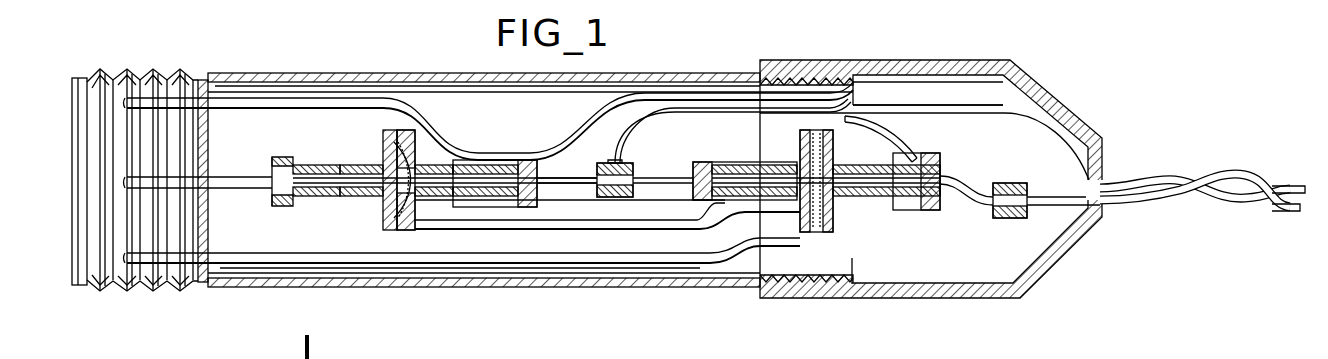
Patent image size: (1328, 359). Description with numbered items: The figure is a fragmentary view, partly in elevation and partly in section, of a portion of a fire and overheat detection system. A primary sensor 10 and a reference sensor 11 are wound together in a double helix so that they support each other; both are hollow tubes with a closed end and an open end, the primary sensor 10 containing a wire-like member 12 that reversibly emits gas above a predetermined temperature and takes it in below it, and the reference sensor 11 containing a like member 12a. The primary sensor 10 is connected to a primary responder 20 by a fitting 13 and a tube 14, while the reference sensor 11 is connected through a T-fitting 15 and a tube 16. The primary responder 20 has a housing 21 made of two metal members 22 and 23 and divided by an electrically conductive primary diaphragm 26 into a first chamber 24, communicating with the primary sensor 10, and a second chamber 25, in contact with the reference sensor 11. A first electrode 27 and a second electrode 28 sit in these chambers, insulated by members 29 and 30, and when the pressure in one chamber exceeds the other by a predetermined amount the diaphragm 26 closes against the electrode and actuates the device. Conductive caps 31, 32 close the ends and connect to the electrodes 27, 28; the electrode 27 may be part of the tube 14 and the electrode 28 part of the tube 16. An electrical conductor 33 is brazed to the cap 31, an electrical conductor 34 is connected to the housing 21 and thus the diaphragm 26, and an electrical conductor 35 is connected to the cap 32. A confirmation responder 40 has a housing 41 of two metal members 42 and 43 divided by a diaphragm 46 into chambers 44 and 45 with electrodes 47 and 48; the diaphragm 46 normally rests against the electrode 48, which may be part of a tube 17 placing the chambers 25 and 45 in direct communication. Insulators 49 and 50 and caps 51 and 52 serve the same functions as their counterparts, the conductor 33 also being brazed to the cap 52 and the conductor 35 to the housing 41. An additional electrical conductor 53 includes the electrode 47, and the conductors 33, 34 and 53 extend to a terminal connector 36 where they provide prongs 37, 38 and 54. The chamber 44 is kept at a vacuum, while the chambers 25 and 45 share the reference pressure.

The primary sensor 10 is at (1212, 191).
The reference sensor 11 is at (932, 179).
The wire-like member 12 is at (1287, 213).
The member 12a is at (1277, 183).
The fitting 13 is at (997, 220).
The tube 14 is at (955, 183).
The T-fitting 15 is at (630, 174).
The tube 16 is at (668, 190).
The tube 17 is at (568, 178).
The primary responder 20 is at (886, 212).
The housing 21 is at (804, 201).
The metal member 22 is at (832, 232).
The metal member 23 is at (806, 228).
The first chamber 24 is at (826, 156).
The second chamber 25 is at (799, 150).
The primary diaphragm 26 is at (816, 233).
The first electrode 27 is at (836, 199).
The second electrode 28 is at (793, 199).
The insulator 29 is at (877, 165).
The insulator 30 is at (753, 167).
The conductive cap 31 is at (935, 163).
The conductive cap 32 is at (693, 167).
The electrical conductor 33 is at (852, 93).
The electrical conductor 34 is at (583, 263).
The electrical conductor 35 is at (567, 224).
The terminal connector 36 is at (215, 76).
The prong 37 is at (155, 107).
The prong 38 is at (141, 275).
The confirmation responder 40 is at (393, 177).
The housing 41 is at (400, 177).
The metal member 42 is at (380, 223).
The metal member 43 is at (407, 228).
The chamber 44 is at (395, 157).
The chamber 45 is at (413, 150).
The diaphragm 46 is at (404, 152).
The electrode 47 is at (377, 198).
The electrode 48 is at (425, 188).
The insulator 49 is at (333, 198).
The insulator 50 is at (470, 201).
The cap 51 is at (278, 201).
The cap 52 is at (533, 160).
The electrical conductor 53 is at (228, 177).
The prong 54 is at (184, 177).